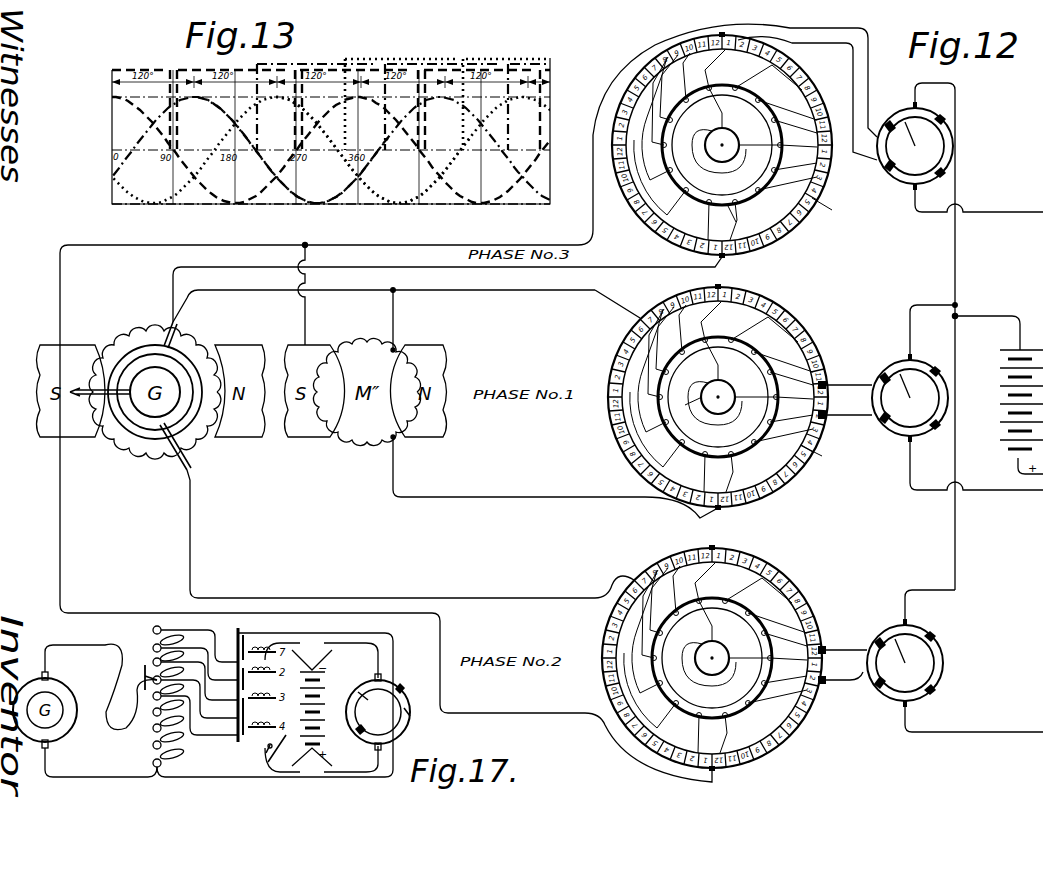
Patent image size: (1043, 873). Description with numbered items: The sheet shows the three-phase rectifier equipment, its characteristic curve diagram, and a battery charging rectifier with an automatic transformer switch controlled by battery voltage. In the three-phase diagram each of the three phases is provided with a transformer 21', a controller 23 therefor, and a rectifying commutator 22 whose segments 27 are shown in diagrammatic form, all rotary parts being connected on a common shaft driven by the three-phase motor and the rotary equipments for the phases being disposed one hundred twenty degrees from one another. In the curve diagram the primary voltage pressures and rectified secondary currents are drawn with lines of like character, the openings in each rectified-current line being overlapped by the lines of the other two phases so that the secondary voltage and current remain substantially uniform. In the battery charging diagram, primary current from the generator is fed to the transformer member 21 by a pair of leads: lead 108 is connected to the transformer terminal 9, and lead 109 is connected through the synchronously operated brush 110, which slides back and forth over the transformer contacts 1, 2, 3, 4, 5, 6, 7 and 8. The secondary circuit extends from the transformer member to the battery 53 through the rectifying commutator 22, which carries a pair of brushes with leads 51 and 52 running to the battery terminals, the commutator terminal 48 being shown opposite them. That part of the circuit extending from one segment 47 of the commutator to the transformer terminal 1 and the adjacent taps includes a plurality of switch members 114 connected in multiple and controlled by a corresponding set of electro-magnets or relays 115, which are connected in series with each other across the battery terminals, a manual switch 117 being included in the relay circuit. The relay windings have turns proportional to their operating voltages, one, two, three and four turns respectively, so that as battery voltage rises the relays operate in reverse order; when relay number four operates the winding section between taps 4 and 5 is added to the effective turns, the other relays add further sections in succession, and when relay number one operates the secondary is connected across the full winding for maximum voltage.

In FIG. 13, the transformer terminal 1 is at (140, 110).
In FIG. 17, the transformer terminal 1 is at (152, 630).
In FIG. 13, the transformer contact 2 is at (222, 108).
In FIG. 17, the transformer contact 2 is at (152, 648).
In FIG. 13, the transformer contact 3 is at (300, 120).
In FIG. 17, the transformer contact 3 is at (152, 662).
In FIG. 17, the transformer tap 4 is at (152, 680).
In FIG. 17, the transformer tap 5 is at (152, 696).
In FIG. 17, the transformer contact 6 is at (152, 712).
In FIG. 17, the transformer contact 7 is at (152, 728).
In FIG. 17, the transformer contact 8 is at (152, 745).
In FIG. 17, the transformer terminal 9 is at (152, 763).
In FIG. 17, the transformer member 21 is at (174, 697).
In FIG. 12, the transformer 21' is at (712, 309).
In FIG. 12, the rectifying commutator 22 is at (905, 404).
In FIG. 17, the rectifying commutator 22 is at (378, 712).
In FIG. 12, the controller 23 is at (717, 401).
In FIG. 12, the commutator segments 27 is at (825, 331).
In FIG. 17, the commutator segment 47 is at (359, 698).
In FIG. 17, the instrument terminal 48 is at (410, 724).
In FIG. 17, the brush lead 51 is at (321, 660).
In FIG. 17, the brush lead 52 is at (321, 759).
In FIG. 17, the battery 53 is at (318, 708).
In FIG. 17, the lead 108 is at (101, 762).
In FIG. 17, the lead 109 is at (101, 694).
In FIG. 17, the brush 110 is at (139, 677).
In FIG. 17, the switch members 114 is at (234, 686).
In FIG. 17, the electro-magnets or relays 115 is at (262, 687).
In FIG. 17, the manual switch 117 is at (284, 748).